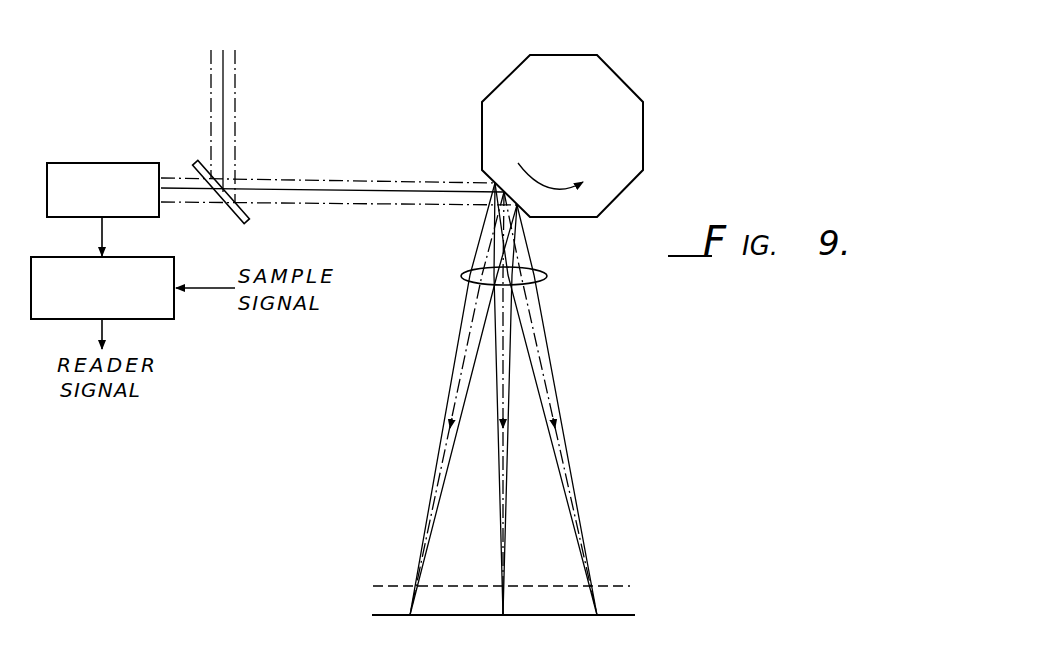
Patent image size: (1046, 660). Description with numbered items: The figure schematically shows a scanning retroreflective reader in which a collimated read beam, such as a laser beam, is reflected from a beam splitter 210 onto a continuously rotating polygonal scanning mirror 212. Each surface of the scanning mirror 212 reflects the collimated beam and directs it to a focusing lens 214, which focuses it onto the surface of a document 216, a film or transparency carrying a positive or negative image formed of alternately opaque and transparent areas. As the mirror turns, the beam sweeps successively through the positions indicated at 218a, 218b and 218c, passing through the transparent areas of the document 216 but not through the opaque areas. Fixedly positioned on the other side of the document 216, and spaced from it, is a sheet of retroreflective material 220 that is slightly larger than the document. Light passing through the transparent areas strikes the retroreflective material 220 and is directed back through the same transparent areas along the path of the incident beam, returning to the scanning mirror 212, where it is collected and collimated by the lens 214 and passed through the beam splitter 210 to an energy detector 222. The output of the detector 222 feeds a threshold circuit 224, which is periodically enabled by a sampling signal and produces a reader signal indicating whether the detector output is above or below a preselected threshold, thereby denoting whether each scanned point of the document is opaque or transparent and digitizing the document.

The beam splitter 210 is at (233, 221).
The scanning mirror 212 is at (649, 91).
The focusing lens 214 is at (537, 279).
The document 216 is at (387, 582).
The scan beam position 218a is at (472, 335).
The scan beam position 218b is at (500, 483).
The scan beam position 218c is at (543, 362).
The sheet of retroreflective material 220 is at (617, 615).
The energy detector 222 is at (106, 162).
The threshold circuit 224 is at (78, 257).